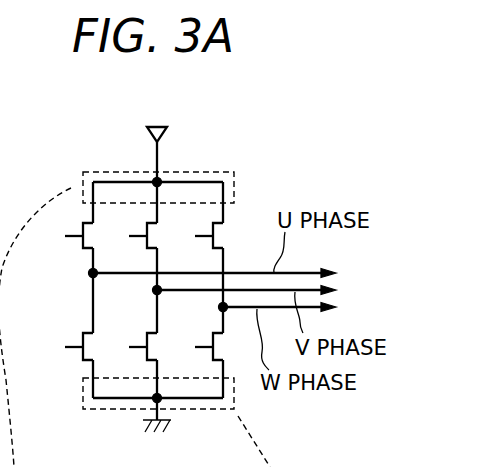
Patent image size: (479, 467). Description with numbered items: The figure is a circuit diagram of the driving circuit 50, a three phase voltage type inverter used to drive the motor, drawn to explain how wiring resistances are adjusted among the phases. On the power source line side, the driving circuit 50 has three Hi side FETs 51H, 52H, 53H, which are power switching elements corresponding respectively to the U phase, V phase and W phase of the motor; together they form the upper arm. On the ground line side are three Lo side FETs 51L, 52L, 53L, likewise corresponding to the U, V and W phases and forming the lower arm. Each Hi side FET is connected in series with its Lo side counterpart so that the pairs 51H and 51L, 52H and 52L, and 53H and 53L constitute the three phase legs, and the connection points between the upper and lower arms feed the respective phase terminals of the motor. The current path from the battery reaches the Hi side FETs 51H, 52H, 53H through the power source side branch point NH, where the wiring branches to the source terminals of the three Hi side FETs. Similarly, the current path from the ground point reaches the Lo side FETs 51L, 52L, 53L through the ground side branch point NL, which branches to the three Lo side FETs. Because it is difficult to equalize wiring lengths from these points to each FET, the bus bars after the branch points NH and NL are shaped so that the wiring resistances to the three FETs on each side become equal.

The driving circuit 50 is at (300, 181).
The Hi side FET 51H is at (83, 241).
The Lo side FET 51L is at (83, 342).
The Hi side FET 52H is at (147, 230).
The Lo side FET 52L is at (147, 341).
The Hi side FET 53H is at (213, 233).
The Lo side FET 53L is at (213, 350).
The power source side branch point NH is at (159, 181).
The ground side branch point NL is at (153, 401).